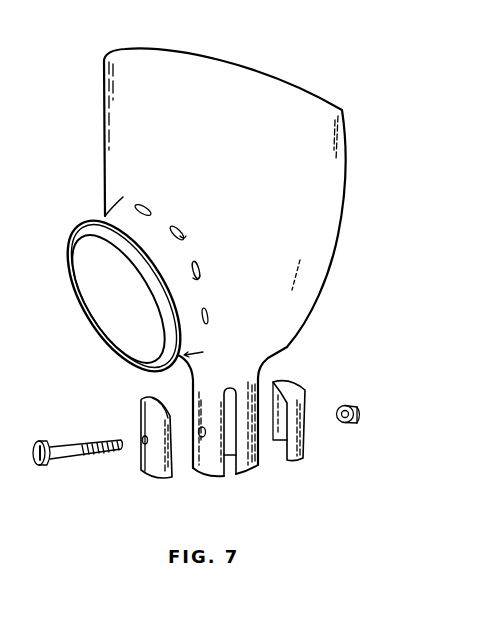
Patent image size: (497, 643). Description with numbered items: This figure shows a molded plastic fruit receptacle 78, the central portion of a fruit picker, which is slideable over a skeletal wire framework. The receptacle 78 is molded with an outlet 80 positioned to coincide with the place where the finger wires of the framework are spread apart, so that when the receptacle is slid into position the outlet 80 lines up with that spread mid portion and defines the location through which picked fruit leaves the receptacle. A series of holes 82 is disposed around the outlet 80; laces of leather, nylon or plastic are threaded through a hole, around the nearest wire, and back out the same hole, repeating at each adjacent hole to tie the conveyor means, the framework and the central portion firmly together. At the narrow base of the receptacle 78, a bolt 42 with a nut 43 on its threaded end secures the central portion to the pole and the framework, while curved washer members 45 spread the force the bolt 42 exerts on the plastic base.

The plastic receptacle 78 is at (335, 236).
The outlet 80 is at (112, 300).
The holes 82 is at (198, 262).
The bolt 42 is at (80, 452).
The nut 43 is at (358, 410).
The curved washer members 45 is at (152, 478).